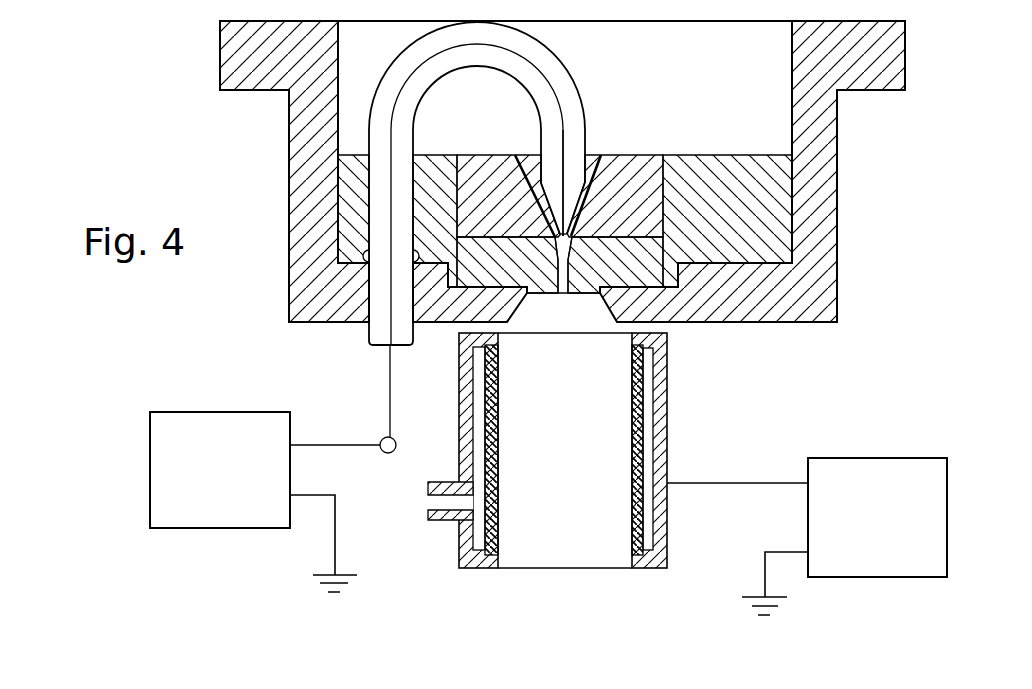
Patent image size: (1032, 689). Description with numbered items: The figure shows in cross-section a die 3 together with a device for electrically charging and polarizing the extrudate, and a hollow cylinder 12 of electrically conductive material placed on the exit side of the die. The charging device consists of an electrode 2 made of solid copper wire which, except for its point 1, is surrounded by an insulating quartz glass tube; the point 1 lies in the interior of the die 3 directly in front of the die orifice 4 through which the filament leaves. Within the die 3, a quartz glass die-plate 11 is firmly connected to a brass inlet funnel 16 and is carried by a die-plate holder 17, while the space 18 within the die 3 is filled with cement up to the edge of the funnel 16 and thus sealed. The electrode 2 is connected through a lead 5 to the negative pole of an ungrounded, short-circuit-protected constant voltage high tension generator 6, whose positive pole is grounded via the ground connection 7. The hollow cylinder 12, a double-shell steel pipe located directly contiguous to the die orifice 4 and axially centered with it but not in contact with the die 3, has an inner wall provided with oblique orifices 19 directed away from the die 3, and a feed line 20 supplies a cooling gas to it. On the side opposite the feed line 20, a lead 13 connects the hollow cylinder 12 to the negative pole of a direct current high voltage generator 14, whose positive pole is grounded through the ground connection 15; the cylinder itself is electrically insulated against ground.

The point 1 is at (578, 233).
The electrode 2 is at (560, 107).
The die 3 is at (888, 186).
The die orifice 4 is at (560, 296).
The high voltage lead 5 is at (290, 445).
The high tension generator 6 is at (190, 518).
The ground connection 7 is at (290, 497).
The die-plate 11 is at (645, 277).
The hollow cylinder 12 is at (668, 418).
The collector lead 13 is at (808, 487).
The high voltage generator 14 is at (930, 543).
The ground connection 15 is at (805, 555).
The inlet funnel 16 is at (488, 165).
The die-plate holder 17 is at (815, 277).
The space 18 is at (345, 195).
The oblique orifices 19 is at (633, 498).
The feed line 20 is at (435, 498).